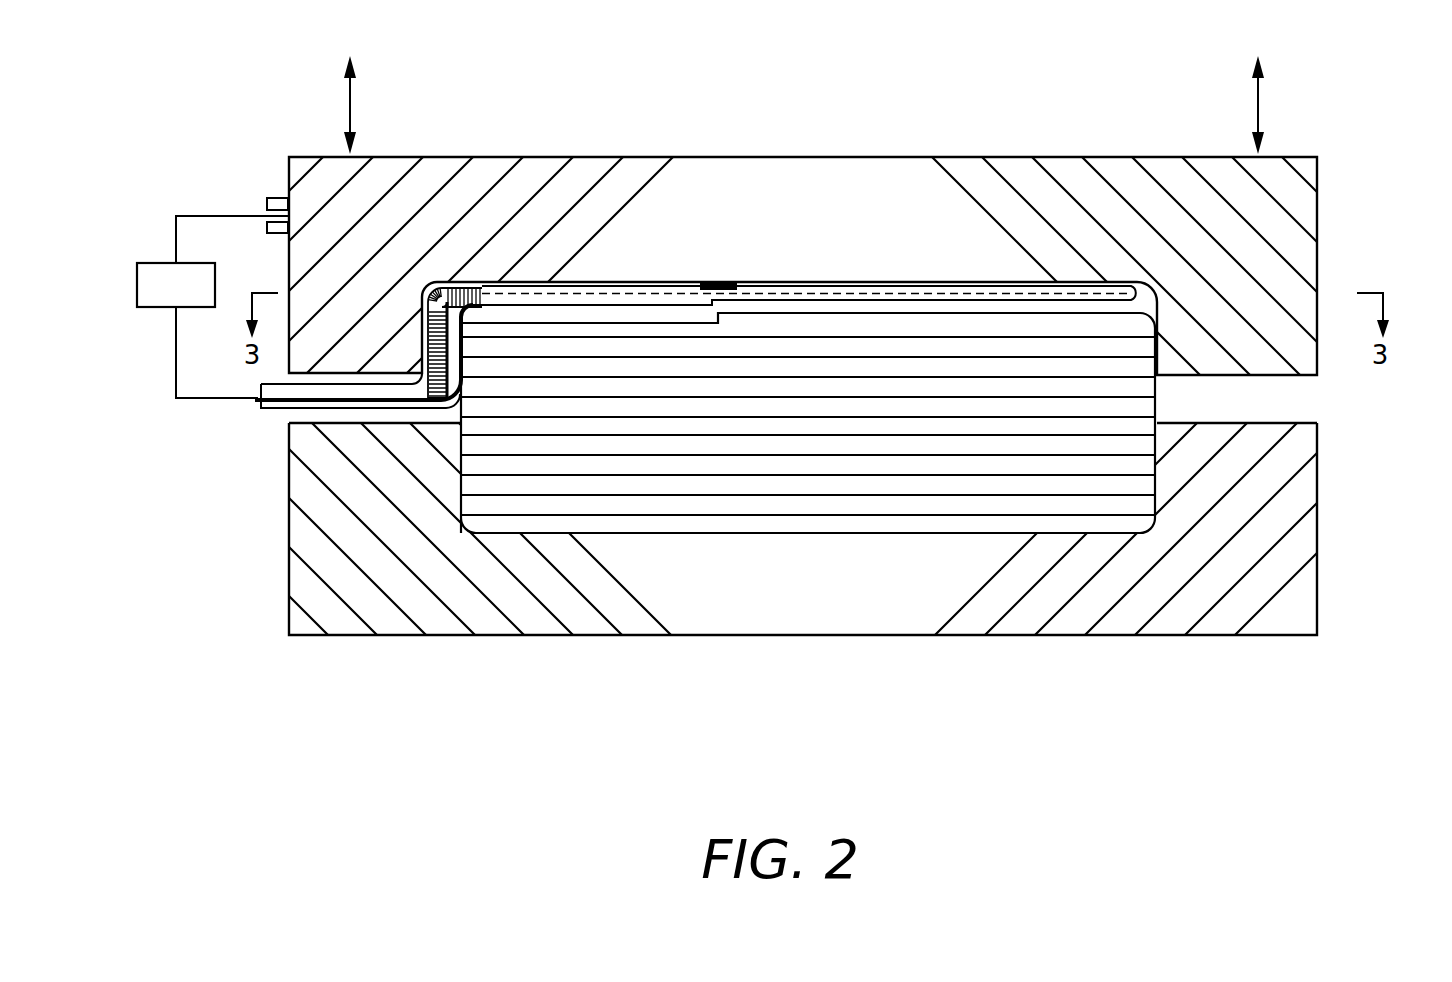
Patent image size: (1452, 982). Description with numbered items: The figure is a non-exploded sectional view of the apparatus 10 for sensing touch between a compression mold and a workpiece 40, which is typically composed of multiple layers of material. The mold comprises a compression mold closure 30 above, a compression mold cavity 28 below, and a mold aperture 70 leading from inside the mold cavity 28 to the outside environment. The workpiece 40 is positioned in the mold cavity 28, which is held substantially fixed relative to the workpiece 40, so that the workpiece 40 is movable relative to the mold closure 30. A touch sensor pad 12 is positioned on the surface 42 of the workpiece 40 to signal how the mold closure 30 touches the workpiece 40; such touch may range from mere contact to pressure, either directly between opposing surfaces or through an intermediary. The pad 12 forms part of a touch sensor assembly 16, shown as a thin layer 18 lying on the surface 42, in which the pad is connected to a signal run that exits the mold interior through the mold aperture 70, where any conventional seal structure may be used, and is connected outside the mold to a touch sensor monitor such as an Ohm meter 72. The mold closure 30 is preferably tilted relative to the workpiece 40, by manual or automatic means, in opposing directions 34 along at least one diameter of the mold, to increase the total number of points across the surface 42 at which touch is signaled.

The apparatus 10 is at (618, 277).
The touch sensor pad 12 is at (702, 275).
The touch sensor assembly 16 is at (860, 279).
The film 18 is at (1110, 293).
The compression mold cavity 28 is at (290, 565).
The compression mold closure 30 is at (289, 165).
The opposing directions 34 is at (1255, 100).
The workpiece 40 is at (1142, 505).
The surface 42 is at (1147, 318).
The mold aperture 70 is at (300, 423).
The Ohm meter 72 is at (152, 263).